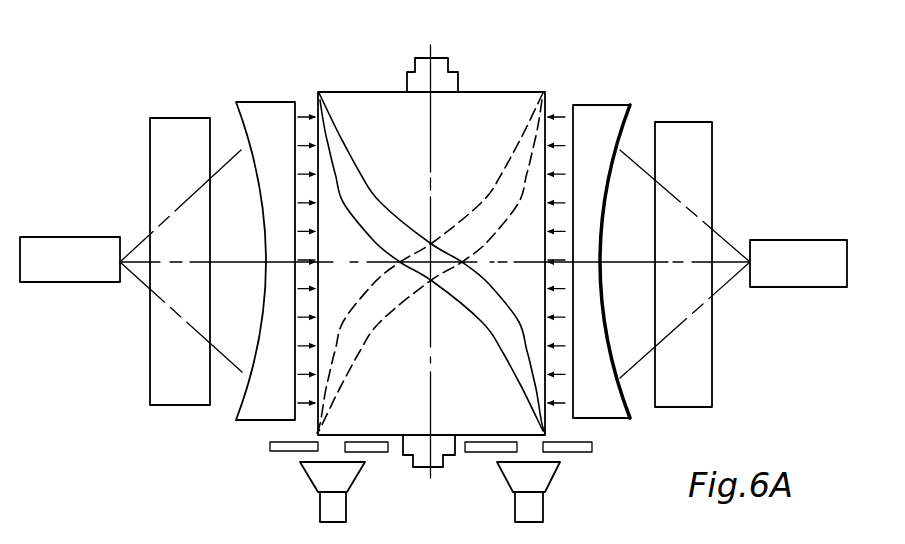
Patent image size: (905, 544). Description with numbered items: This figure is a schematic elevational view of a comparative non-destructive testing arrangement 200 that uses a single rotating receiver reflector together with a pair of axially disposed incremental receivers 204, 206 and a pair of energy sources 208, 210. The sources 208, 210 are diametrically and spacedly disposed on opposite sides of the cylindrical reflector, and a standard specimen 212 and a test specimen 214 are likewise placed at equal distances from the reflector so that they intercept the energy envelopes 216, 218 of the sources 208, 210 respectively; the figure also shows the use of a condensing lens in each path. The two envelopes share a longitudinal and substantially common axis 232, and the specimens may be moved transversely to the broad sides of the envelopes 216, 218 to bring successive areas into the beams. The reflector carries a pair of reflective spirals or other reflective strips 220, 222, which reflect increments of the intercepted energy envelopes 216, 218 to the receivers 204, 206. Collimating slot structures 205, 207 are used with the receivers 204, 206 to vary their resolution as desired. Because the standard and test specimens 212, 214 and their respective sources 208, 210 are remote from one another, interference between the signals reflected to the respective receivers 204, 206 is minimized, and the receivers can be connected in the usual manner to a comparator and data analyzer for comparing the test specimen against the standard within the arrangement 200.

The comparative non-destructive testing arrangement 200 is at (548, 63).
The incremental receiver 204 is at (347, 480).
The collimating slot structure 205 is at (290, 452).
The incremental receiver 206 is at (513, 466).
The collimating slot structure 207 is at (583, 452).
The energy source 208 is at (40, 237).
The energy source 210 is at (818, 240).
The standard specimen 212 is at (168, 118).
The test specimen 214 is at (690, 122).
The energy envelope 216 is at (215, 175).
The energy envelope 218 is at (655, 172).
The reflective spiral 220 is at (357, 190).
The reflective spiral 222 is at (358, 335).
The common axis 232 is at (256, 258).